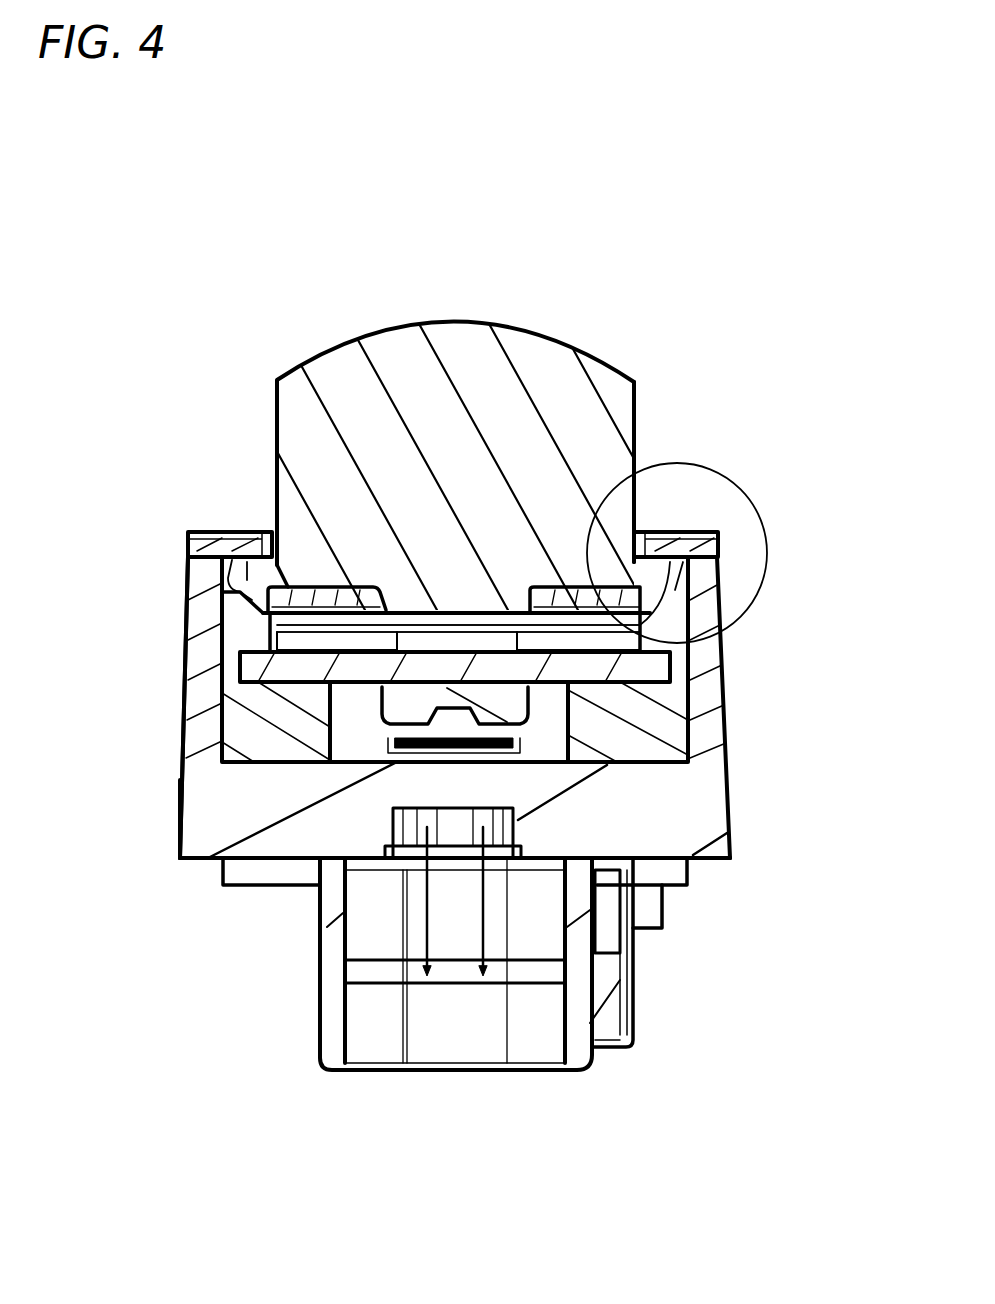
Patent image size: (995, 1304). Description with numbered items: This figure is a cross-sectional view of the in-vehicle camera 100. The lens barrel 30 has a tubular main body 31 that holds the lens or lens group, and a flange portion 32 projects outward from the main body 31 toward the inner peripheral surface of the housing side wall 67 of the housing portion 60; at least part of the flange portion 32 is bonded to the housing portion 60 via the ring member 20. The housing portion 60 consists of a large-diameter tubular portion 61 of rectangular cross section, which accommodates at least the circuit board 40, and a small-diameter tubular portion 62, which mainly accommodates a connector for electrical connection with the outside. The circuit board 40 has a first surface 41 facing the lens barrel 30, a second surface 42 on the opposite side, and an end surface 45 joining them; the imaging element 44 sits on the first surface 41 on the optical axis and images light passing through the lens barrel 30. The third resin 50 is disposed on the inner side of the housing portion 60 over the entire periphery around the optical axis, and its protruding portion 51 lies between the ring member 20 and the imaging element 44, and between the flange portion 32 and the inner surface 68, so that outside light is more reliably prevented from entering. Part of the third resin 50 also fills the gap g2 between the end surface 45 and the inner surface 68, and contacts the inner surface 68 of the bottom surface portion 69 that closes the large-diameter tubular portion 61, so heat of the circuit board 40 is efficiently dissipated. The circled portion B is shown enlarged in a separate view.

The in-vehicle camera 100 is at (777, 335).
The ring member 20 is at (212, 532).
The lens barrel 30 is at (538, 337).
The main body 31 is at (640, 425).
The flange portion 32 is at (245, 582).
The circuit board 40 is at (250, 668).
The first surface 41 is at (603, 645).
The second surface 42 is at (673, 712).
The imaging element 44 is at (437, 643).
The end surface 45 is at (637, 688).
The gap g2 is at (657, 657).
The third resin 50 is at (222, 748).
The protruding portion 51 is at (690, 627).
The housing portion 60 is at (78, 870).
The large-diameter tubular portion 61 is at (183, 838).
The small-diameter tubular portion 62 is at (318, 963).
The housing side wall 67 is at (205, 693).
The inner surface 68 is at (693, 752).
The bottom surface portion 69 is at (207, 801).
The portion B is at (727, 473).